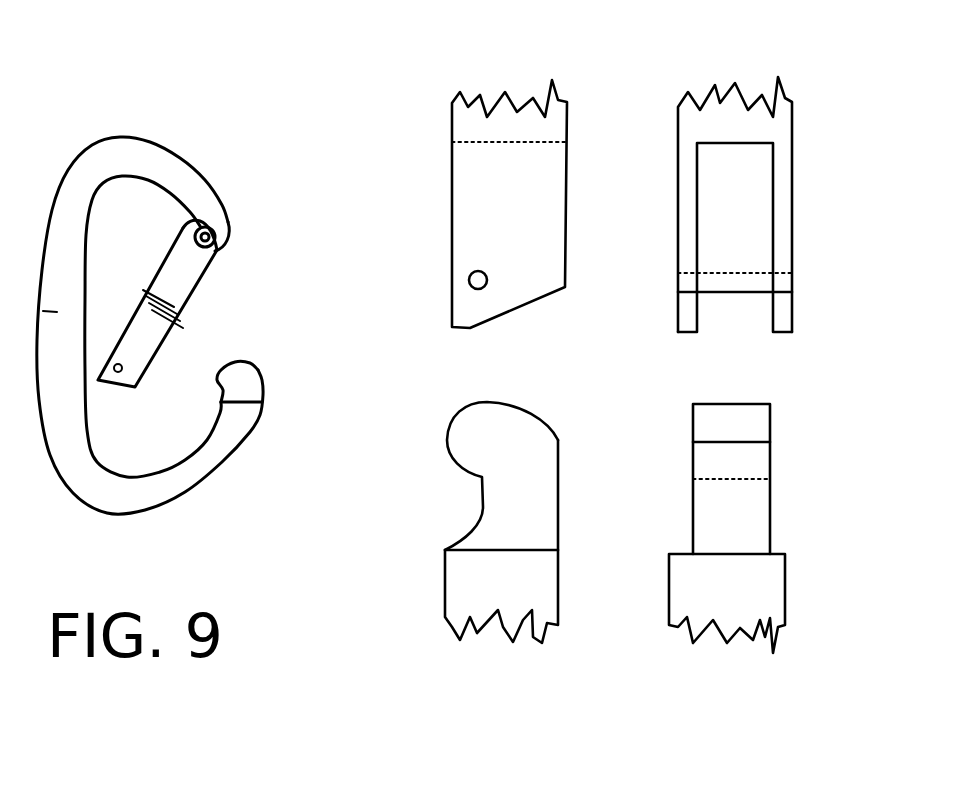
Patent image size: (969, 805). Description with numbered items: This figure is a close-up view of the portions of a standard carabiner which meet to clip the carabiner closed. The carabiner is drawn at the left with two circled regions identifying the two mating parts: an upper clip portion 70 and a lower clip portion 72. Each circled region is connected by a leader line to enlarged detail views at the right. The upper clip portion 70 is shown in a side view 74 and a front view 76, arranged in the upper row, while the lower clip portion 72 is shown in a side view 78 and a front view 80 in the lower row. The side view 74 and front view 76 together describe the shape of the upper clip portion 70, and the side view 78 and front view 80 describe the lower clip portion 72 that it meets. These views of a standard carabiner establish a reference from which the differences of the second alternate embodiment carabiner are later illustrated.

The upper clip portion 70 is at (342, 266).
The lower clip portion 72 is at (407, 517).
The side view of upper clip portion 74 is at (190, 330).
The front view of upper clip portion 76 is at (770, 204).
The side view of lower clip portion 78 is at (465, 529).
The front view of lower clip portion 80 is at (768, 534).